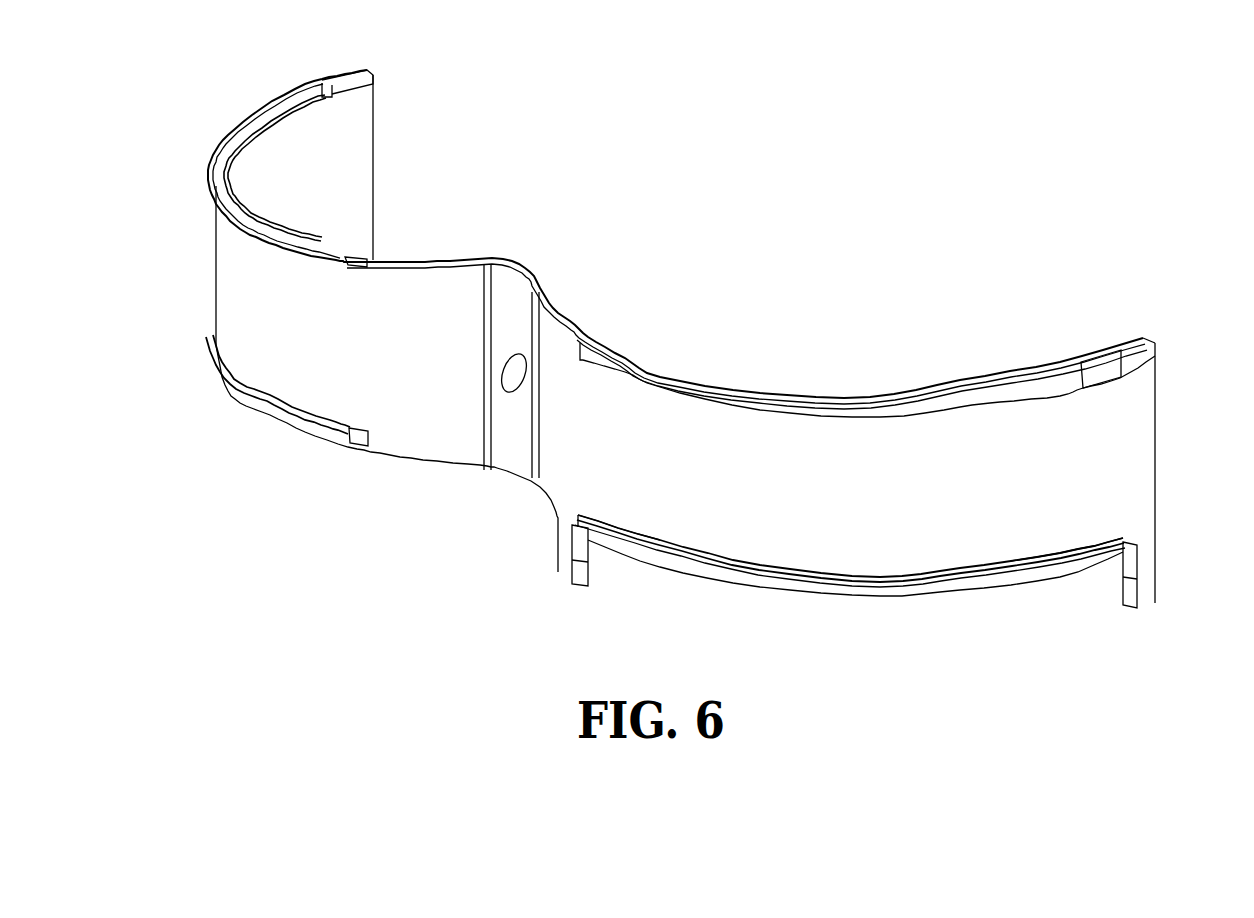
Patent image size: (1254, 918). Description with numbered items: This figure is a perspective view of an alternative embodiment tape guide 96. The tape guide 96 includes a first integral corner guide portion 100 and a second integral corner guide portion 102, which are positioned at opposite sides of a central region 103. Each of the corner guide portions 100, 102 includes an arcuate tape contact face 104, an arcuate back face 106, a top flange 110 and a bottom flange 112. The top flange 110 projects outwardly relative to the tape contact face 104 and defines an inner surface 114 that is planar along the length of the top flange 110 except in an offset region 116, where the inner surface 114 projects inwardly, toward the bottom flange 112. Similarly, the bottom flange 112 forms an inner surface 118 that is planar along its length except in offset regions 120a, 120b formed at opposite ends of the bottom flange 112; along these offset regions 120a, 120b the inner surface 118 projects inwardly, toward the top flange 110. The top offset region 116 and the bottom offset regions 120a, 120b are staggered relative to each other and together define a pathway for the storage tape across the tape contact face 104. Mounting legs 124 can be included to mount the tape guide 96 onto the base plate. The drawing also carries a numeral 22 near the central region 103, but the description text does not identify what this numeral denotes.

The tape guide 96 is at (797, 215).
The first integral corner guide portion 100 is at (345, 73).
The second integral corner guide portion 102 is at (1125, 427).
The central region 103 is at (488, 478).
The arcuate tape contact face 104 is at (287, 352).
The arcuate back face 106 is at (347, 143).
The top flange 110 is at (334, 247).
The bottom flange 112 is at (205, 364).
The inner surface 114 is at (253, 235).
The offset region 116 is at (212, 201).
The inner surface 118 is at (215, 377).
The offset region 120a is at (309, 432).
The offset region 120b is at (1057, 562).
The mounting legs 124 is at (567, 565).
The mounting hole region 22 is at (484, 516).